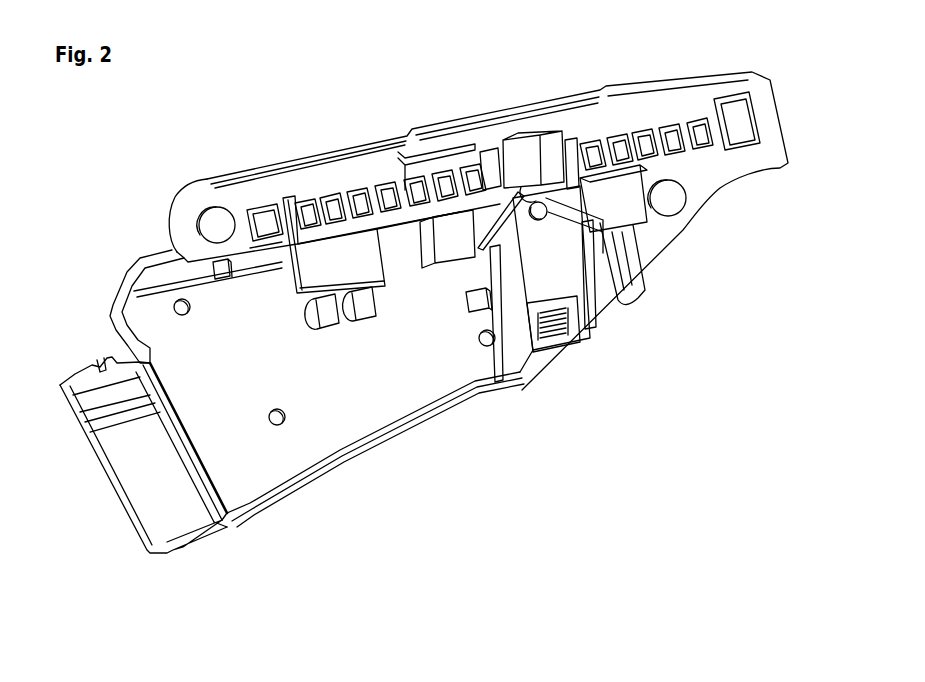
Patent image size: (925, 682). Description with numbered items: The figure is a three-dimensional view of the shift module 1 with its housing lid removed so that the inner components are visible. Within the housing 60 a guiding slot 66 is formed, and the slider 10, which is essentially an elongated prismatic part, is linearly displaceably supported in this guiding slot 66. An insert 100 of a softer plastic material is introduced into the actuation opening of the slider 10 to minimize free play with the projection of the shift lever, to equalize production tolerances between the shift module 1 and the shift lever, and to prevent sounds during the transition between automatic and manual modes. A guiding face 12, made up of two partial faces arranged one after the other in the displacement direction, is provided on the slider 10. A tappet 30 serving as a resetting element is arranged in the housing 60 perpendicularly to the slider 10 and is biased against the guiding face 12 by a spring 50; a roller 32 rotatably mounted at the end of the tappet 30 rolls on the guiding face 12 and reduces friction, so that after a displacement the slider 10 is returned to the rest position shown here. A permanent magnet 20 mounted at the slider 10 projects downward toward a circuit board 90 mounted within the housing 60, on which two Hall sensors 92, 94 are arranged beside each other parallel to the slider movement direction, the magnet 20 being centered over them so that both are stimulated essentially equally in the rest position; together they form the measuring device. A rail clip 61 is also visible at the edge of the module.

The shift module 1 is at (152, 160).
The slider 10 is at (618, 137).
The guiding face 12 is at (502, 252).
The magnet 20 is at (330, 253).
The tappet 30 is at (555, 273).
The roller 32 is at (543, 217).
The spring 50 is at (557, 335).
The housing 60 is at (387, 163).
The mounting rail clip 61 is at (101, 360).
The guiding slot 66 is at (730, 112).
The circuit board 90 is at (247, 450).
The Hall sensor 92 is at (318, 311).
The Hall sensor 94 is at (357, 305).
The insert 100 is at (527, 147).